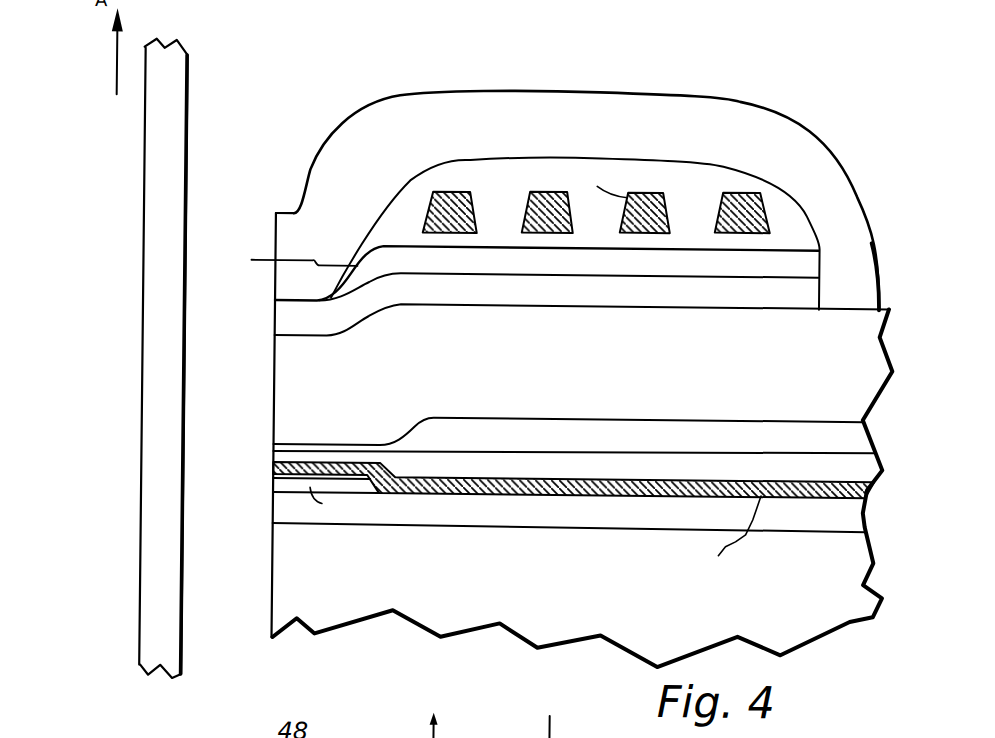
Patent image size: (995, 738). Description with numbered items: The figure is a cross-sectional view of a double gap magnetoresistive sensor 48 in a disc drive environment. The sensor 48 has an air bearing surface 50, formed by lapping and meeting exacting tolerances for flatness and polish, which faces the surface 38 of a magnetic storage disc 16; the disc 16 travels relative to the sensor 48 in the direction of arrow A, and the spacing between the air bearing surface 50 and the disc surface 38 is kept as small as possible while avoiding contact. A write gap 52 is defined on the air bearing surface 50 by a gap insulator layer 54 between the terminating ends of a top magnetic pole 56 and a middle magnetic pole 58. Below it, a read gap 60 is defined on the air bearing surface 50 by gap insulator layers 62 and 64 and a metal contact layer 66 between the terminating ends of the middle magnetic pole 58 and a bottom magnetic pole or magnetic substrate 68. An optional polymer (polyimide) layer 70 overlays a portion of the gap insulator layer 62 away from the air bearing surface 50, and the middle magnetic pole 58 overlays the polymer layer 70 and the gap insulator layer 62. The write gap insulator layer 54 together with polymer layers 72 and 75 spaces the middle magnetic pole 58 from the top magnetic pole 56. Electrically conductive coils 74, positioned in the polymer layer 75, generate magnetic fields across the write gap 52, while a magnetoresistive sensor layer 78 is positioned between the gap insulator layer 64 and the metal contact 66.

The magnetic storage disc 16 is at (141, 176).
The disc surface 38 is at (184, 72).
The double gap magnetoresistive sensor 48 is at (832, 101).
The air bearing surface 50 is at (272, 236).
The write gap 52 is at (273, 313).
The write gap insulator layer 54 is at (289, 321).
The top magnetic pole 56 is at (396, 118).
The middle magnetic pole 58 is at (280, 386).
The read gap 60 is at (291, 485).
The gap insulator layer 62 is at (274, 453).
The gap insulator layer 64 is at (289, 520).
The metal contact layer 66 is at (274, 473).
The bottom magnetic pole or magnetic substrate 68 is at (284, 575).
The polymer layer 70 is at (446, 422).
The polymer layer 72 is at (286, 261).
The electrically conductive coils 74 is at (518, 193).
The polymer layer 75 is at (403, 206).
The magnetoresistive sensor layer 78 is at (289, 495).